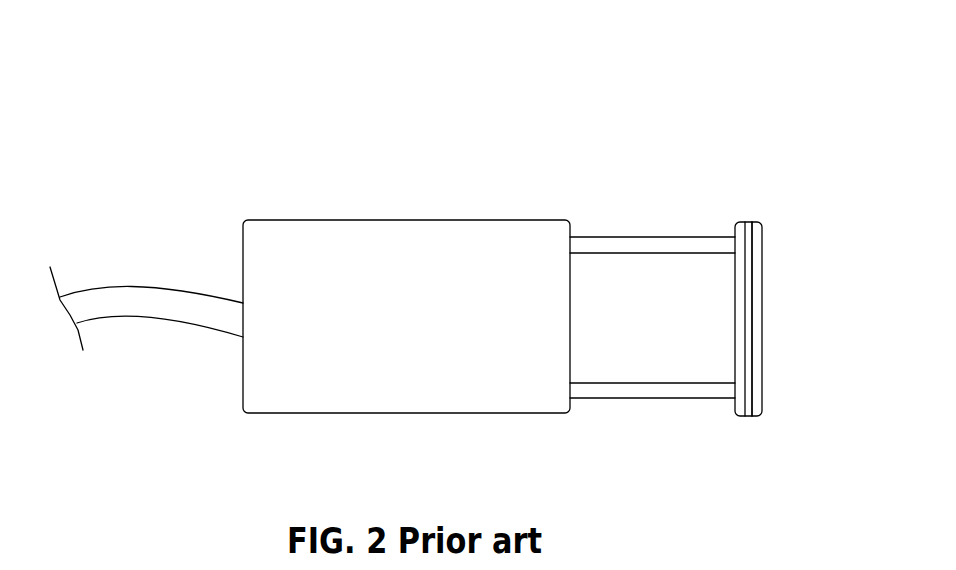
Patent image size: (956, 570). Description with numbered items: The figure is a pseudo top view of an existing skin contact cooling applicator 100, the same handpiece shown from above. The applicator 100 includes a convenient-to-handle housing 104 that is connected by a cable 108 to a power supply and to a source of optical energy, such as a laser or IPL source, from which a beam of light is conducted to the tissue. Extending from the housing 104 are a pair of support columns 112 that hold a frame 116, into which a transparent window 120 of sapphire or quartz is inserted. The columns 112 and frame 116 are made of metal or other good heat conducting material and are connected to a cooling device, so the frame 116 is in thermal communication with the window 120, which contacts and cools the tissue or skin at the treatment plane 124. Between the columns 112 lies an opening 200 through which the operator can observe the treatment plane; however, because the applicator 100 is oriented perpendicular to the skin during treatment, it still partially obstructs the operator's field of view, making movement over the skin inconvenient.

The applicator 100 is at (527, 104).
The housing 104 is at (400, 220).
The cable 108 is at (145, 283).
The support columns 112 is at (682, 400).
The frame 116 is at (735, 273).
The transparent window 120 is at (762, 347).
The treatment plane 124 is at (762, 386).
The opening 200 is at (673, 333).